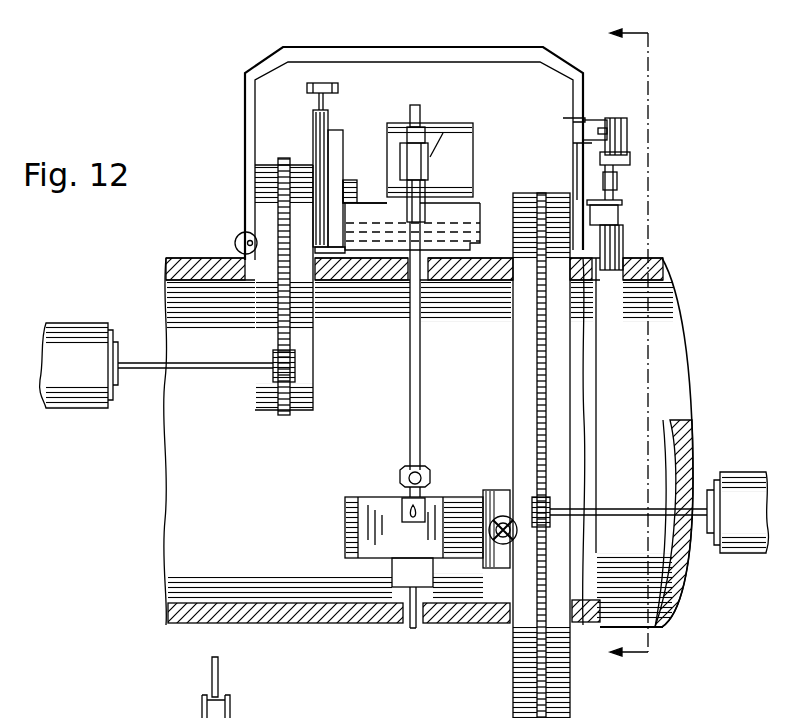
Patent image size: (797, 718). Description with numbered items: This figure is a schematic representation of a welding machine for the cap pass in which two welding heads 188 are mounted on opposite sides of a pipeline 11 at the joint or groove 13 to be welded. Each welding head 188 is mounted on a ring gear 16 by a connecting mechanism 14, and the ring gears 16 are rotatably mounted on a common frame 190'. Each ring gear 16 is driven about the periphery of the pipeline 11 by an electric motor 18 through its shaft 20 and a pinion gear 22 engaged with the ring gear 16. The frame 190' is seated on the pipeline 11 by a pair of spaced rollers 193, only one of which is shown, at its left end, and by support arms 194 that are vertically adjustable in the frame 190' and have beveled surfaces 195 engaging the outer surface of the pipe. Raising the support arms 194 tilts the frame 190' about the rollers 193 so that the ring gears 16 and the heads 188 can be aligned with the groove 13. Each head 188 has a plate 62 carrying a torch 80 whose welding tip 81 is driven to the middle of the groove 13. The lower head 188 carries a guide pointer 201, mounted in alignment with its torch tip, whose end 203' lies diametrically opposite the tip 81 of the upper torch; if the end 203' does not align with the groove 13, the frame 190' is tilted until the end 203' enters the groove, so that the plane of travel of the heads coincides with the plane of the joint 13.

The pipeline section 11 is at (343, 618).
The joint 13 is at (647, 344).
The connecting mechanism 14 is at (307, 128).
The ring gear 16 is at (315, 338).
The electric motor 18 is at (62, 323).
The shaft 20 is at (141, 369).
The pinion gear 22 is at (273, 378).
The bottom support plate 62 is at (470, 198).
The welding head or torch 80 is at (430, 185).
The welding tip 81 is at (424, 255).
The welding head 188 is at (467, 141).
The frame 190' is at (440, 153).
The roller 193 is at (236, 239).
The support arm 194 is at (626, 240).
The beveled surface 195 is at (612, 270).
The guide pointer 201 is at (395, 591).
The pointer end 203' is at (432, 624).